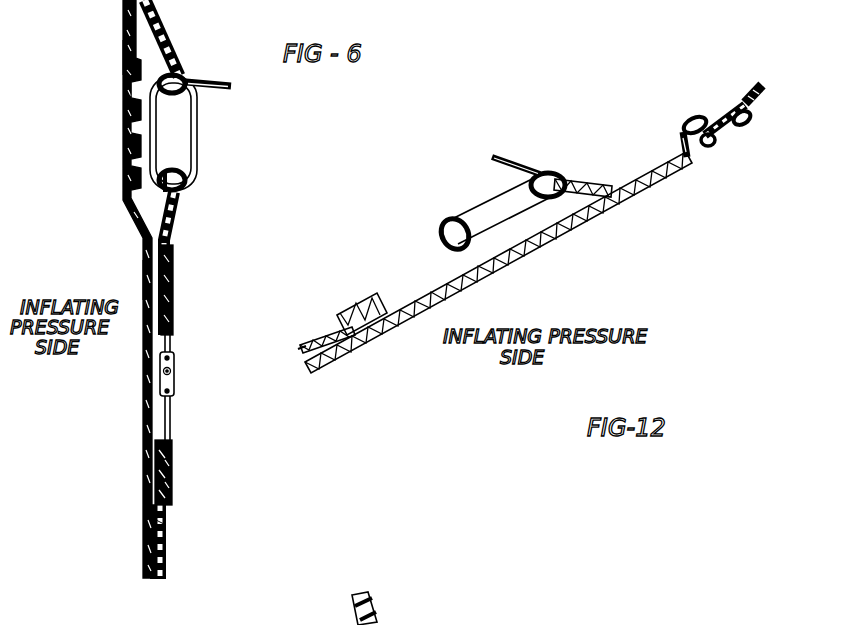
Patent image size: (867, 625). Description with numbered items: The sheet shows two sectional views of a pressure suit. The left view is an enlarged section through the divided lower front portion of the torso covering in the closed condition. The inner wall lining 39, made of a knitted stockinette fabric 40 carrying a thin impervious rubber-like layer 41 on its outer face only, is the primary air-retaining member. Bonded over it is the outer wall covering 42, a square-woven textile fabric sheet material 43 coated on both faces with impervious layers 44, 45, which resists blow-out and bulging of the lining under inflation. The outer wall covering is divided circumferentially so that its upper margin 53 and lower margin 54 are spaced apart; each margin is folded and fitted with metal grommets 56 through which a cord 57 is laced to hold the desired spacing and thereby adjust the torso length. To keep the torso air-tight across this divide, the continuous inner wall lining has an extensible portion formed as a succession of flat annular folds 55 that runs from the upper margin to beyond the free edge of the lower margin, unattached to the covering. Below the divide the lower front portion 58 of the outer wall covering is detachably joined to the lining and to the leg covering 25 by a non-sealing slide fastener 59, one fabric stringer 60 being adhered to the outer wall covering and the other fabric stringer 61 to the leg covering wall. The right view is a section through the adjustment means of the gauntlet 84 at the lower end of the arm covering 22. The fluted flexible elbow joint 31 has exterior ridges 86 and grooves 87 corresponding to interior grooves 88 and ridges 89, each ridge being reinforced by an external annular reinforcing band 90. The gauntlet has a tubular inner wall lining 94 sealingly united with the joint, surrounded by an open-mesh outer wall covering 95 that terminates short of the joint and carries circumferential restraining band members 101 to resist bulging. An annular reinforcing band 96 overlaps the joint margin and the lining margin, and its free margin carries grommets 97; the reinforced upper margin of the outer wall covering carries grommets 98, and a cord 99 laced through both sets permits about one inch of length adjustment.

In FIG. 12, the arm covering 22 is at (519, 222).
In FIG. 6, the leg covering 25 is at (190, 572).
In FIG. 12, the flexible elbow joint 31 is at (745, 95).
In FIG. 6, the inner wall lining 39 is at (123, 23).
In FIG. 6, the knitted fabric 40 is at (122, 58).
In FIG. 6, the impervious layer 41 is at (143, 280).
In FIG. 6, the outer wall covering 42 is at (150, 10).
In FIG. 6, the textile fabric sheet material 43 is at (168, 527).
In FIG. 6, the impervious layer 44 is at (159, 578).
In FIG. 6, the impervious layer 45 is at (163, 578).
In FIG. 6, the upper margin 53 is at (204, 106).
In FIG. 6, the lower margin 54 is at (185, 215).
In FIG. 6, the annular folds 55 is at (128, 80).
In FIG. 6, the metal grommets 56 is at (180, 78).
In FIG. 6, the cord 57 is at (197, 133).
In FIG. 6, the lower front portion 58 is at (176, 238).
In FIG. 6, the slide fastener 59 is at (176, 386).
In FIG. 6, the fabric stringer 60 is at (172, 338).
In FIG. 6, the fabric stringer 61 is at (173, 431).
In FIG. 12, the gauntlet 84 is at (303, 347).
In FIG. 12, the outer ridge 86 is at (690, 120).
In FIG. 12, the outer groove 87 is at (733, 124).
In FIG. 12, the inner groove 88 is at (702, 132).
In FIG. 12, the inner ridge 89 is at (742, 128).
In FIG. 12, the reinforcing band 90 is at (678, 134).
In FIG. 12, the inner wall lining 94 is at (448, 290).
In FIG. 12, the outer wall covering 95 is at (320, 340).
In FIG. 12, the reinforcing band 96 is at (585, 185).
In FIG. 12, the grommets 97 is at (584, 150).
In FIG. 12, the grommets 98 is at (441, 236).
In FIG. 12, the cord 99 is at (462, 214).
In FIG. 12, the restraining band members 101 is at (348, 318).